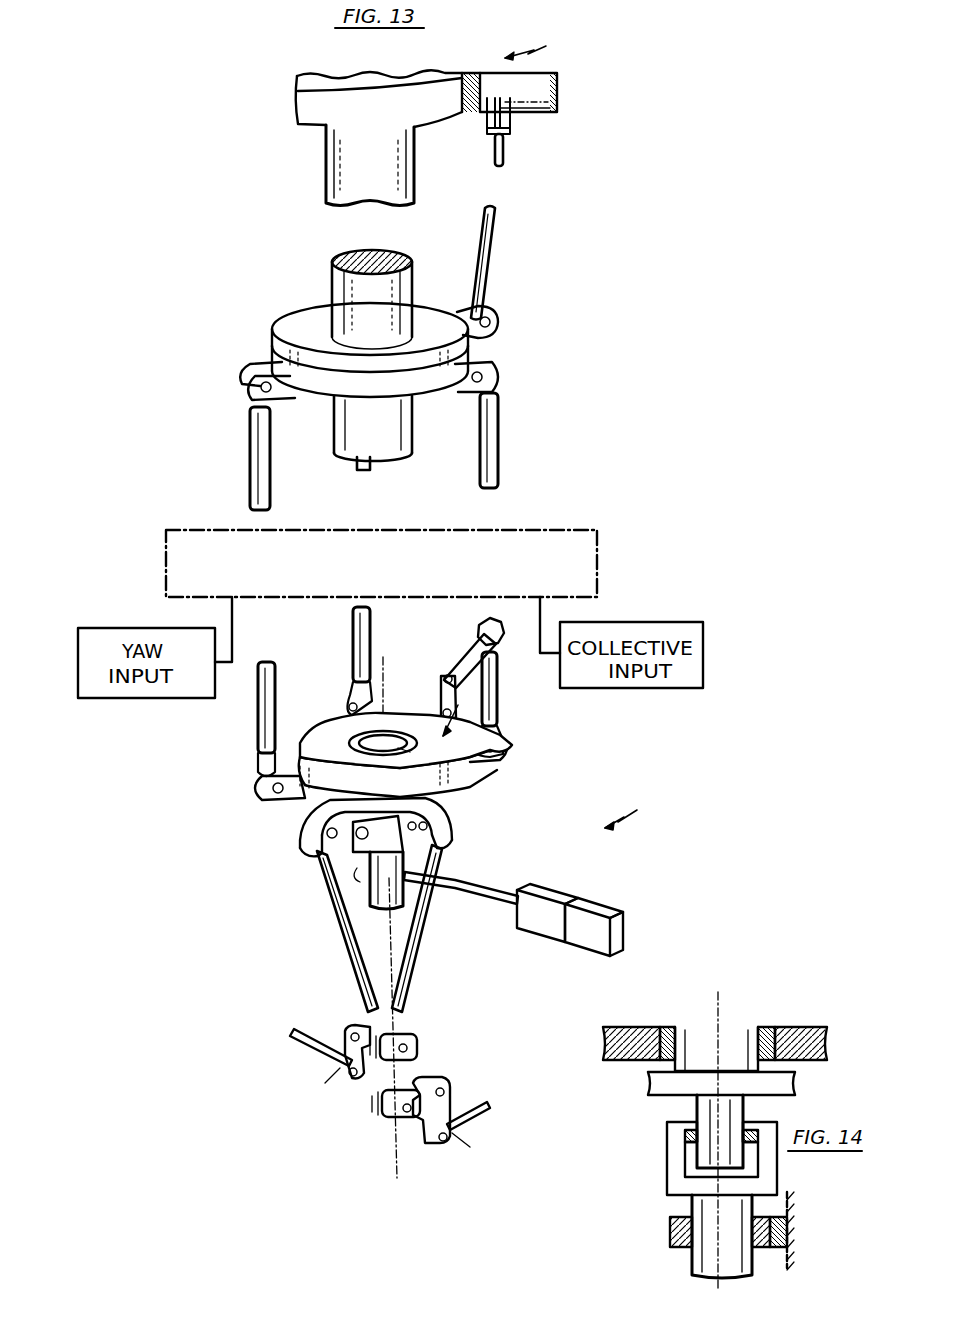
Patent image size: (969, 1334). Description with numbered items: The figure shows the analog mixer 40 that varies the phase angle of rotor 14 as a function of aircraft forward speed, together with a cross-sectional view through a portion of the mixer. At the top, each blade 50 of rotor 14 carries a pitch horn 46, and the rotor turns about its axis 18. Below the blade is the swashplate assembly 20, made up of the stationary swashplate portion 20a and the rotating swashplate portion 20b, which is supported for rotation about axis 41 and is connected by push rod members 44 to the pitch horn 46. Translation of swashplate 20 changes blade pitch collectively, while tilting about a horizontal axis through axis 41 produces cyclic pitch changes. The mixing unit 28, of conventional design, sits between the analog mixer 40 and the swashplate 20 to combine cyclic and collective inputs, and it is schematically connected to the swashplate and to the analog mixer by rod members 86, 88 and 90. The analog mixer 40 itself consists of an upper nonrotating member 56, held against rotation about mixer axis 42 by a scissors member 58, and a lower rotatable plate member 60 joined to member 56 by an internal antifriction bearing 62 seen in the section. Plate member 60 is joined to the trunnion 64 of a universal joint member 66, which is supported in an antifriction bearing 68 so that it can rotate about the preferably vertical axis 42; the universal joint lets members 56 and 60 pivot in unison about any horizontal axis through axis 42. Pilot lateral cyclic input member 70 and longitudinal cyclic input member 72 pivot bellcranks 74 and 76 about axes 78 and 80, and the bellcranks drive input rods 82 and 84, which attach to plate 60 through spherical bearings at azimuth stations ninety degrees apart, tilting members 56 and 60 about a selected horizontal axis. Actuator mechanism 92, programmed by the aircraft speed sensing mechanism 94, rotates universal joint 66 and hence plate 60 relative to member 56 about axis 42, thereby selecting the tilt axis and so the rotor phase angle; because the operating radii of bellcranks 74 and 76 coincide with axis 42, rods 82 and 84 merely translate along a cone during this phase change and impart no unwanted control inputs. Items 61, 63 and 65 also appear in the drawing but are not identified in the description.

In FIG. 13, the rigid rotor 14 is at (538, 49).
In FIG. 13, the rotor axis 18 is at (367, 76).
In FIG. 13, the swashplate assembly 20 is at (405, 348).
In FIG. 13, the stationary swashplate portion 20a is at (418, 386).
In FIG. 13, the rotating swashplate portion 20b is at (463, 307).
In FIG. 13, the mixing unit 28 is at (541, 524).
In FIG. 13, the analog mixer 40 is at (634, 813).
In FIG. 13, the axis 41 is at (372, 258).
In FIG. 13, the mixer axis 42 is at (386, 680).
In FIG. 14, the mixer axis 42 is at (718, 996).
In FIG. 13, the push rod member 44 is at (488, 205).
In FIG. 13, the pitch horn 46 is at (511, 122).
In FIG. 13, the blade 50 is at (558, 96).
In FIG. 13, the upper nonrotating member 56 is at (406, 732).
In FIG. 14, the upper nonrotating member 56 is at (726, 1019).
In FIG. 13, the scissors member 58 is at (484, 639).
In FIG. 13, the lower rotatable plate member 60 is at (447, 789).
In FIG. 14, the lower rotatable plate member 60 is at (648, 1084).
In FIG. 13, the direction arrow 61 is at (461, 711).
In FIG. 13, the internal antifriction bearing 62 is at (350, 743).
In FIG. 14, the internal antifriction bearing 62 is at (766, 1026).
In FIG. 13, the plate surface 63 is at (414, 758).
In FIG. 14, the trunnion 64 is at (688, 1130).
In FIG. 13, the lug 65 is at (314, 799).
In FIG. 13, the universal joint member 66 is at (366, 890).
In FIG. 14, the universal joint member 66 is at (686, 1145).
In FIG. 14, the antifriction bearing 68 is at (690, 1221).
In FIG. 13, the pilot lateral cyclic pitch input member 70 is at (489, 1110).
In FIG. 13, the longitudinal cyclic input member 72 is at (296, 1022).
In FIG. 13, the bellcrank 74 is at (472, 1148).
In FIG. 13, the bellcrank 76 is at (320, 1083).
In FIG. 13, the bellcrank pivot axis 78 is at (455, 1087).
In FIG. 13, the bellcrank pivot axis 80 is at (347, 1040).
In FIG. 13, the input rod 82 is at (345, 945).
In FIG. 13, the input rod 84 is at (424, 941).
In FIG. 13, the rod member 86 is at (358, 471).
In FIG. 13, the rod member 88 is at (252, 482).
In FIG. 13, the rod member 90 is at (481, 478).
In FIG. 13, the actuator mechanism 92 is at (519, 906).
In FIG. 13, the aircraft speed sensing mechanism 94 is at (598, 907).